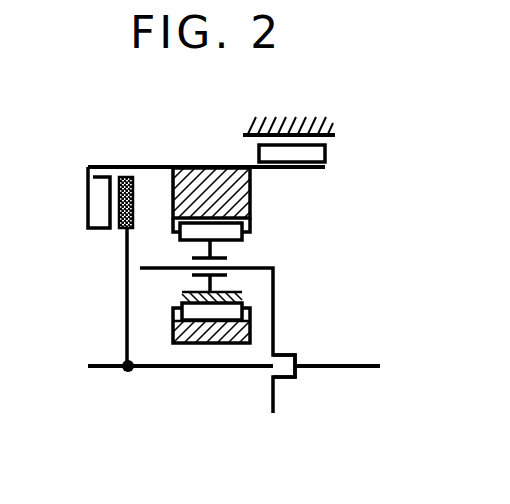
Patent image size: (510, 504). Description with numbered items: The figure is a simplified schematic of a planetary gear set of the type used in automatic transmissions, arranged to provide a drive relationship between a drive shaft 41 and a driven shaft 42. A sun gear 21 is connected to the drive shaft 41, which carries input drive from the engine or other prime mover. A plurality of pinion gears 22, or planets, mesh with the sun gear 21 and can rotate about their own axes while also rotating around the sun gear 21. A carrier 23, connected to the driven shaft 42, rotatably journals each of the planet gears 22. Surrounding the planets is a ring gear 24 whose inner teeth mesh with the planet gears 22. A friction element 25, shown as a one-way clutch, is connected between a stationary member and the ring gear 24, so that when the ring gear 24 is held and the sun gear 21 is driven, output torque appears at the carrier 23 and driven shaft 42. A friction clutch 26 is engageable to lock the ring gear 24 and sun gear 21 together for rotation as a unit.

The sun gear 21 is at (272, 390).
The pinion gears 22 is at (213, 250).
The carrier 23 is at (274, 305).
The ring gear 24 is at (251, 213).
The friction element 25 is at (243, 157).
The friction clutch 26 is at (96, 160).
The drive shaft 41 is at (146, 368).
The driven shaft 42 is at (325, 368).